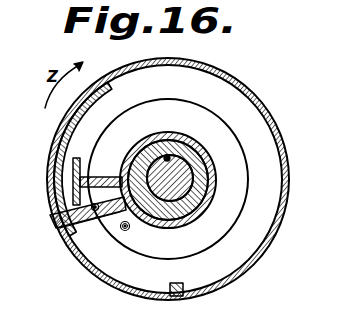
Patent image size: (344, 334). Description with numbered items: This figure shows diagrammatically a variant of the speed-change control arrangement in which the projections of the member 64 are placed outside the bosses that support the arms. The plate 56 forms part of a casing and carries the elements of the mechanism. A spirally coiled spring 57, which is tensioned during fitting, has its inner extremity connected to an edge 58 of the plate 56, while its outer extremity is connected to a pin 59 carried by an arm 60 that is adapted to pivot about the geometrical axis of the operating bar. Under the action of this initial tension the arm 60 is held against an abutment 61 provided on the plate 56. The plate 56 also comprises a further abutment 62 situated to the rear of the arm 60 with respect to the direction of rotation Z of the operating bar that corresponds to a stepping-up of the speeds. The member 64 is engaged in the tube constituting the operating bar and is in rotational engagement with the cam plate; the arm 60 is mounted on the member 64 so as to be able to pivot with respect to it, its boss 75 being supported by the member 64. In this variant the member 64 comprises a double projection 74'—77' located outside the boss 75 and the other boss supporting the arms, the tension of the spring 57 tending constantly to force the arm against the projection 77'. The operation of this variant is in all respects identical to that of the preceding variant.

The plate 56 is at (257, 101).
The spirally coiled spring 57 is at (236, 213).
The edge 58 is at (125, 231).
The pin 59 is at (95, 212).
The arm 60 is at (84, 223).
The abutment 61 is at (53, 215).
The abutment 62 is at (180, 283).
The member 64 is at (205, 216).
The projection 74' is at (97, 157).
The boss 75 is at (177, 131).
The projection 77' is at (61, 159).